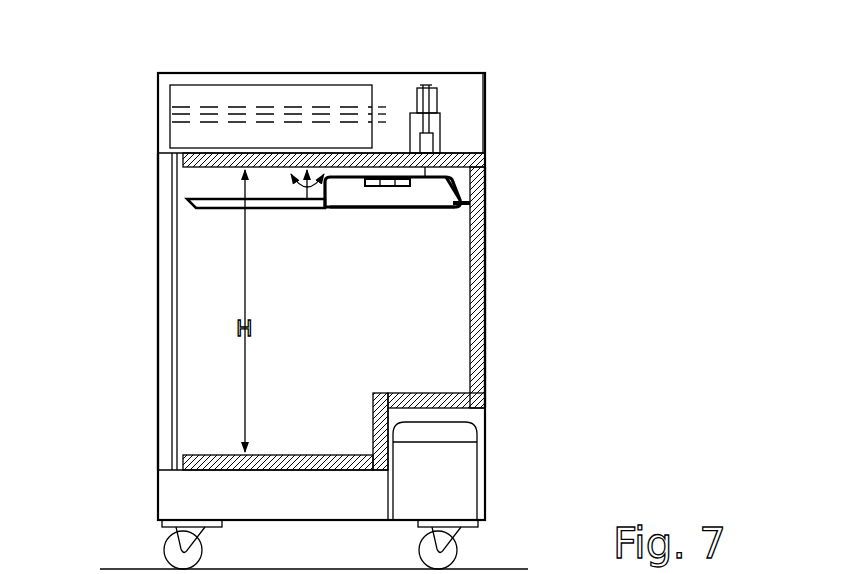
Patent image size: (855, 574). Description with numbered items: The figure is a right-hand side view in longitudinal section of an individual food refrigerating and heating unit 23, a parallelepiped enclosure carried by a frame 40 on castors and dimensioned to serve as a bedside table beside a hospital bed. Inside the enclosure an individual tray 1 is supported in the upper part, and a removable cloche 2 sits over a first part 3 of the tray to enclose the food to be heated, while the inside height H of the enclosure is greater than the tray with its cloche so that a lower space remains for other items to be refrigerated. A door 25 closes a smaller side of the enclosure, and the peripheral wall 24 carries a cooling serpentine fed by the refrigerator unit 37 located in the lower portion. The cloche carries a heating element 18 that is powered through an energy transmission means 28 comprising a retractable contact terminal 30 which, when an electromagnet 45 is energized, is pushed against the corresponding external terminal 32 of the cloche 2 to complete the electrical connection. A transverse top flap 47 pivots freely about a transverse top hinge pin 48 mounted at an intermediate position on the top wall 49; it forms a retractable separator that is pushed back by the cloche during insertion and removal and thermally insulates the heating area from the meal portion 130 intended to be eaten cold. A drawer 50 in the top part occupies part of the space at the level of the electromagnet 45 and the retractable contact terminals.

The tray 1 is at (410, 210).
The cloche 2 is at (457, 190).
The first part of the tray 3 is at (347, 190).
The element 18 is at (393, 176).
The individual food refrigerating and heating unit 23 is at (138, 102).
The peripheral wall 24 is at (480, 374).
The door 25 is at (162, 264).
The energy transmission means 28 is at (440, 83).
The contact terminal 30 is at (442, 136).
The external terminal 32 is at (450, 181).
The refrigerator unit 37 is at (473, 493).
The frame 40 is at (460, 548).
The electromagnet 45 is at (432, 97).
The transverse top flap 47 is at (323, 184).
The transverse top hinge pin 48 is at (293, 217).
The top wall 49 is at (222, 152).
The drawer 50 is at (185, 95).
The meal portion 130 is at (213, 198).